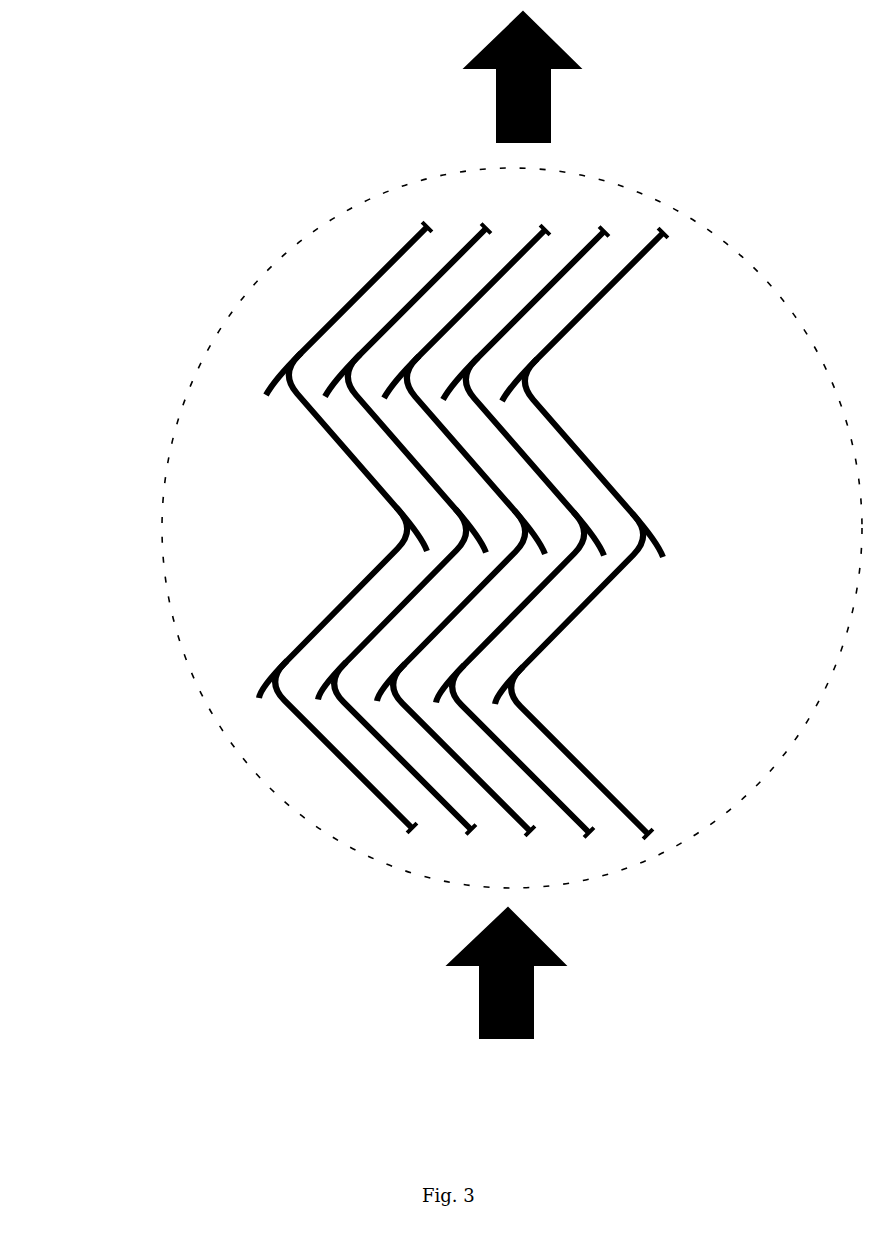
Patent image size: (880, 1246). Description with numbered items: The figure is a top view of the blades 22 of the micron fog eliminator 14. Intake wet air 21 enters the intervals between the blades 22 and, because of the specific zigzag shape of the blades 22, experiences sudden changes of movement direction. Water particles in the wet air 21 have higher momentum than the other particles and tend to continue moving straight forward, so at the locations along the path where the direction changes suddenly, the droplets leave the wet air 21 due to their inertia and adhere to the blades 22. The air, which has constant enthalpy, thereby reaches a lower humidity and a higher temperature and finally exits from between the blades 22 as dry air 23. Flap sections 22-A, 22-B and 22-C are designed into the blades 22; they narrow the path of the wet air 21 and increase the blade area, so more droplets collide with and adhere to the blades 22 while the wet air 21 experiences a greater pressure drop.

The micron fog eliminator 14 is at (665, 202).
The intake wet air 21 is at (533, 978).
The blades 22 is at (365, 282).
The flap section 22-A is at (260, 688).
The flap section 22-B is at (427, 543).
The flap section 22-C is at (266, 384).
The dry air 23 is at (552, 82).